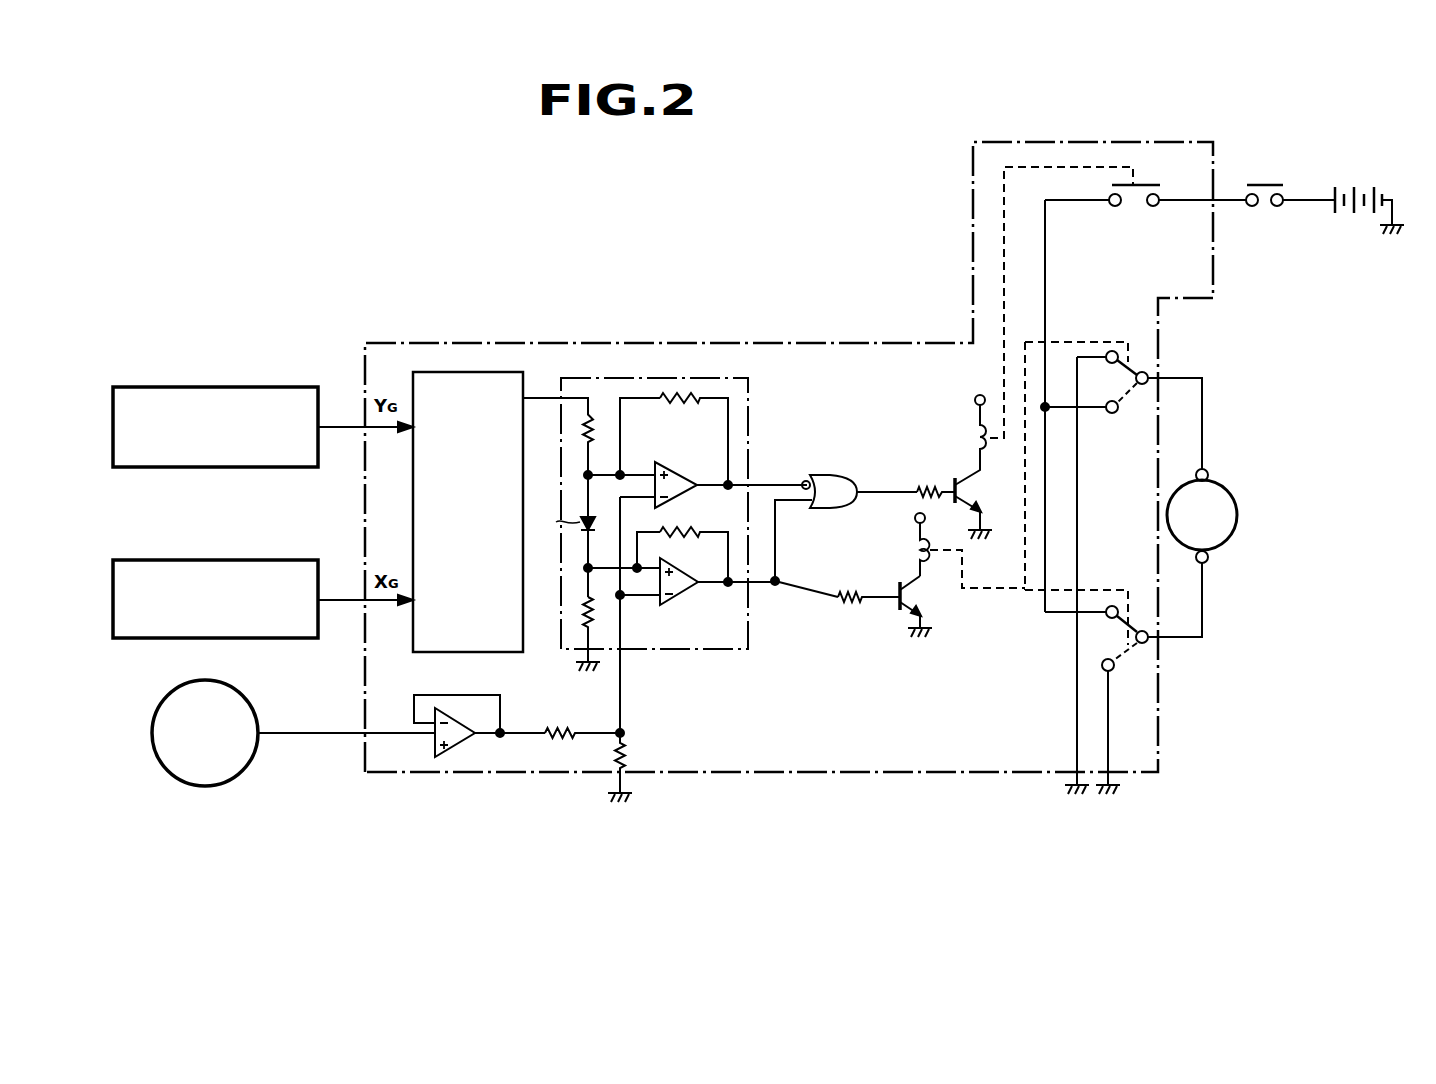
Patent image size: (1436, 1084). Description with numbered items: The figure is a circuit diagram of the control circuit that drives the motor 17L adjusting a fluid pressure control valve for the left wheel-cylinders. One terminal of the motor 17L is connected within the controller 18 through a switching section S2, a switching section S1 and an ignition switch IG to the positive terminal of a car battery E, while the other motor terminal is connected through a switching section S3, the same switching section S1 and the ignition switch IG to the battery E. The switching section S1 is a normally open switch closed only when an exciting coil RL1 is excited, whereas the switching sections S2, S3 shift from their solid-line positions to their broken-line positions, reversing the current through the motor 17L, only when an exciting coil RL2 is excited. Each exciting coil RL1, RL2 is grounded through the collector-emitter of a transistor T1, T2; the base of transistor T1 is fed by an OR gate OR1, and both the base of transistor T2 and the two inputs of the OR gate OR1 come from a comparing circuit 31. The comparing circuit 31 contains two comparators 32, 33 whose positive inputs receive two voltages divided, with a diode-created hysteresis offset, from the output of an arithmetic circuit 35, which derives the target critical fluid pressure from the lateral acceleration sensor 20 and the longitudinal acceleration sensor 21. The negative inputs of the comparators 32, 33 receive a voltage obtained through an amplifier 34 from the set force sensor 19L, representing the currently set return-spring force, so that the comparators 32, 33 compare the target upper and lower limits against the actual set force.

The controller 18 is at (1082, 140).
The lateral acceleration sensor 20 is at (298, 387).
The longitudinal acceleration sensor 21 is at (282, 560).
The set force sensor 19L is at (250, 700).
The arithmetic circuit 35 is at (496, 372).
The comparing circuit 31 is at (645, 378).
The comparator 32 is at (672, 463).
The comparator 33 is at (684, 600).
The amplifier 34 is at (463, 745).
The motor 17L is at (1233, 500).
The OR gate OR1 is at (826, 472).
The transistor T1 is at (978, 503).
The transistor T2 is at (862, 606).
The exciting coil RL1 is at (1030, 317).
The exciting coil RL2 is at (945, 550).
The switching section S1 is at (1145, 183).
The switching section S2 is at (1139, 410).
The switching section S3 is at (1144, 617).
The ignition switch IG is at (1290, 183).
The car battery E is at (1338, 220).